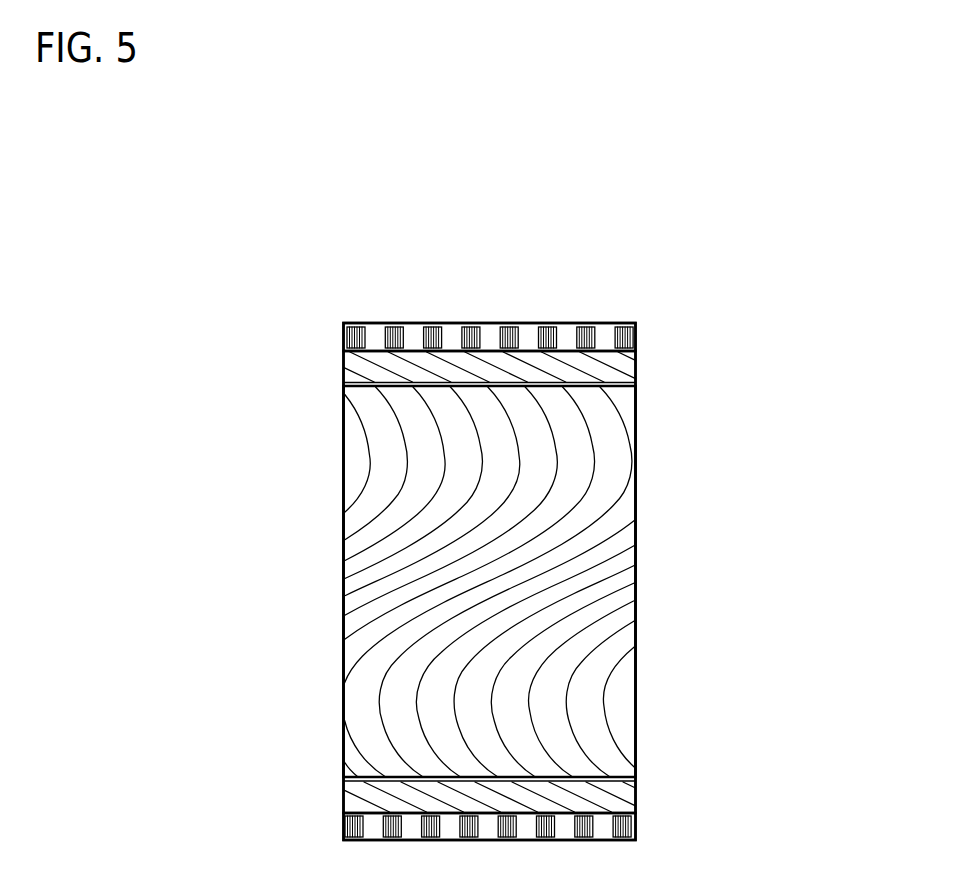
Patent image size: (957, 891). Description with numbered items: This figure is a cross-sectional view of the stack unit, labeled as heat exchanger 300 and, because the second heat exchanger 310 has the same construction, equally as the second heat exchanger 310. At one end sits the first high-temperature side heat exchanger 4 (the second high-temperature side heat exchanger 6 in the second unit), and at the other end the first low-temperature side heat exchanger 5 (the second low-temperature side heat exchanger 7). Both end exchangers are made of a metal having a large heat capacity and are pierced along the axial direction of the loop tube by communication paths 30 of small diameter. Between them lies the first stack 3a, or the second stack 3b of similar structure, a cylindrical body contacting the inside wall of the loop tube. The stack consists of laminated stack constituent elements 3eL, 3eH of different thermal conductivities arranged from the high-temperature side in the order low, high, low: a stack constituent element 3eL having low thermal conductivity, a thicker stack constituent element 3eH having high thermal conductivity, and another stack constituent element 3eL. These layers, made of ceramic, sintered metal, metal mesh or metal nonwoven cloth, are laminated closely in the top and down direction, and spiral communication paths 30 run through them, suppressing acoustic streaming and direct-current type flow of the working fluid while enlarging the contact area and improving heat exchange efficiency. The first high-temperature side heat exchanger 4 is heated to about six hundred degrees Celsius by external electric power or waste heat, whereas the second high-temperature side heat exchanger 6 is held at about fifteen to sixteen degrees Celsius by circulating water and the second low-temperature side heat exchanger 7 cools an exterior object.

The piezoelectric element 300 is at (508, 285).
The second heat exchanger 310 is at (485, 582).
The first low-temperature side heat exchanger 5 is at (638, 333).
The second high-temperature side heat exchanger 6 is at (490, 337).
The first high-temperature side heat exchanger 4 is at (636, 835).
The second low-temperature side heat exchanger 7 is at (490, 826).
The first stack 3a is at (342, 462).
The second stack 3b is at (509, 579).
The stack constituent element having a low thermal conductivity 3eL is at (635, 362).
The stack constituent element having a high thermal conductivity 3eH is at (620, 573).
The communication paths 30 is at (372, 622).